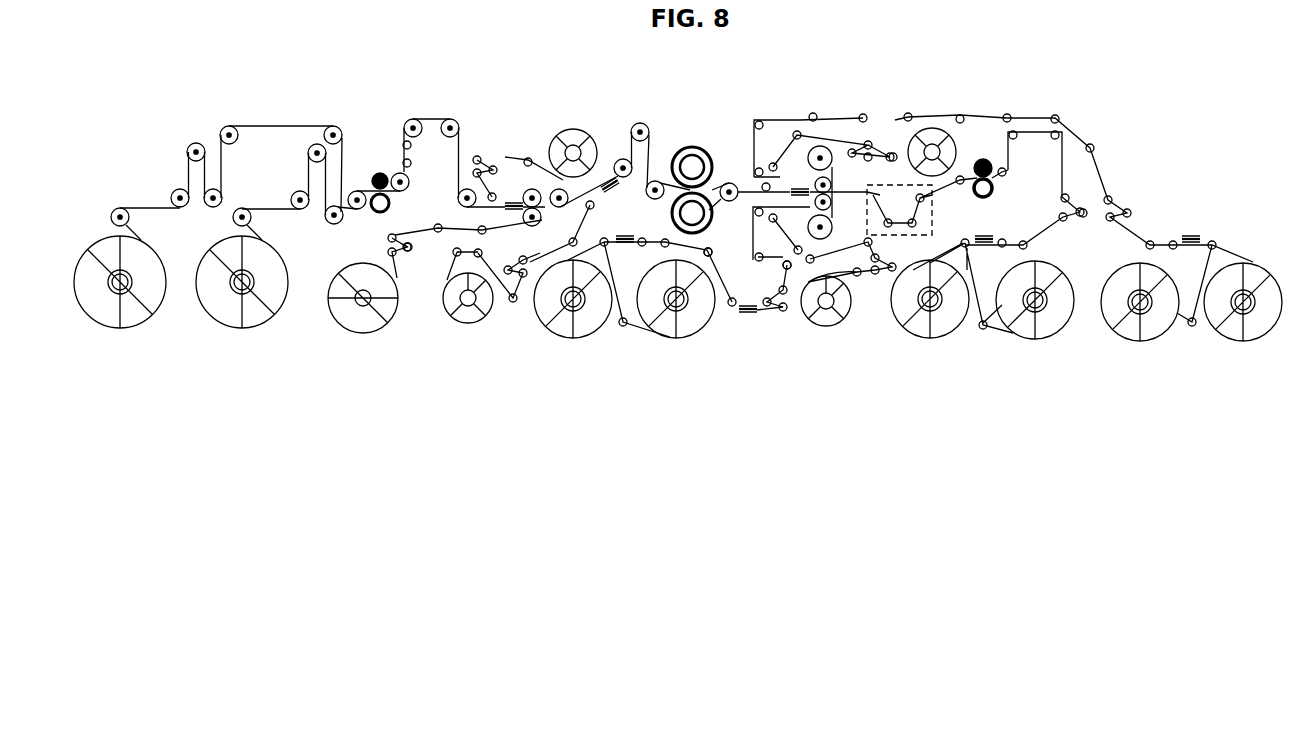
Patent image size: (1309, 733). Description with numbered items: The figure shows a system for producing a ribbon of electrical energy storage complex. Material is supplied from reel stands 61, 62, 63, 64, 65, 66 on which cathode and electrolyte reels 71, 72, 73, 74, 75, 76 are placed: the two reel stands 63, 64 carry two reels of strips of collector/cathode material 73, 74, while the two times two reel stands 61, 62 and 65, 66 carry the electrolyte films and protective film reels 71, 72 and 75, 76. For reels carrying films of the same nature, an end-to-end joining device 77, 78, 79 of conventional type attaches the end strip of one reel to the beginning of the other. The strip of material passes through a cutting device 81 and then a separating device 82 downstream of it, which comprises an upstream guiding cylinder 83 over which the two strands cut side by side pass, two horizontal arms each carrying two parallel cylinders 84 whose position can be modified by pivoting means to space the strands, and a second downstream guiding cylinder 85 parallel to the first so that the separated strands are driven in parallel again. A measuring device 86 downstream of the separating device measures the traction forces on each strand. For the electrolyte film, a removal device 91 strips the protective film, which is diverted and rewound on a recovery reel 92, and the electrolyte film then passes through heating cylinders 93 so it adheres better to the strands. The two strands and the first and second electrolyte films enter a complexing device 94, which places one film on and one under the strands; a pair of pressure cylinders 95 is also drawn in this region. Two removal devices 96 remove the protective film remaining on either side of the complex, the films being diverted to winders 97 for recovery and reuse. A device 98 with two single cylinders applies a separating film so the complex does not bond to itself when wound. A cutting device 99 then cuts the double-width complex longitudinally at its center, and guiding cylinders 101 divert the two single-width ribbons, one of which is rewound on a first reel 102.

The reel stand 61 is at (585, 305).
The reel stand 62 is at (688, 305).
The reel stand 63 is at (940, 303).
The reel stand 64 is at (1045, 307).
The reel stand 65 is at (1152, 307).
The reel stand 66 is at (1255, 305).
The electrolyte film and protective film reel 71 is at (573, 338).
The electrolyte film and protective film reel 72 is at (676, 338).
The reel of strips of collector/cathode material 73 is at (930, 338).
The reel of strips of collector/cathode material 74 is at (1035, 338).
The electrolyte film and protective film reel 75 is at (1140, 340).
The electrolyte film and protective film reel 76 is at (1243, 340).
The end-to-end joining device 77 is at (623, 235).
The end-to-end joining device 78 is at (990, 233).
The end-to-end joining device 79 is at (1195, 233).
The cutting device 81 is at (985, 158).
The separating device 82 is at (908, 113).
The upstream guiding cylinder 83 is at (932, 195).
The parallel cylinders 84 is at (880, 240).
The downstream guiding cylinder 85 is at (880, 185).
The measuring device 86 is at (867, 193).
The protective film removal device 91 is at (760, 207).
The recovery reel 92 is at (930, 133).
The heating cylinders 93 is at (797, 253).
The complexing device 94 is at (802, 187).
The pressure roller pair 95 is at (690, 147).
The removal devices 96 is at (513, 200).
The winders 97 is at (573, 129).
The separating film applying device 98 is at (538, 222).
The cutting device 99 is at (380, 173).
The guiding cylinders 101 is at (334, 226).
The first reel 102 is at (242, 328).